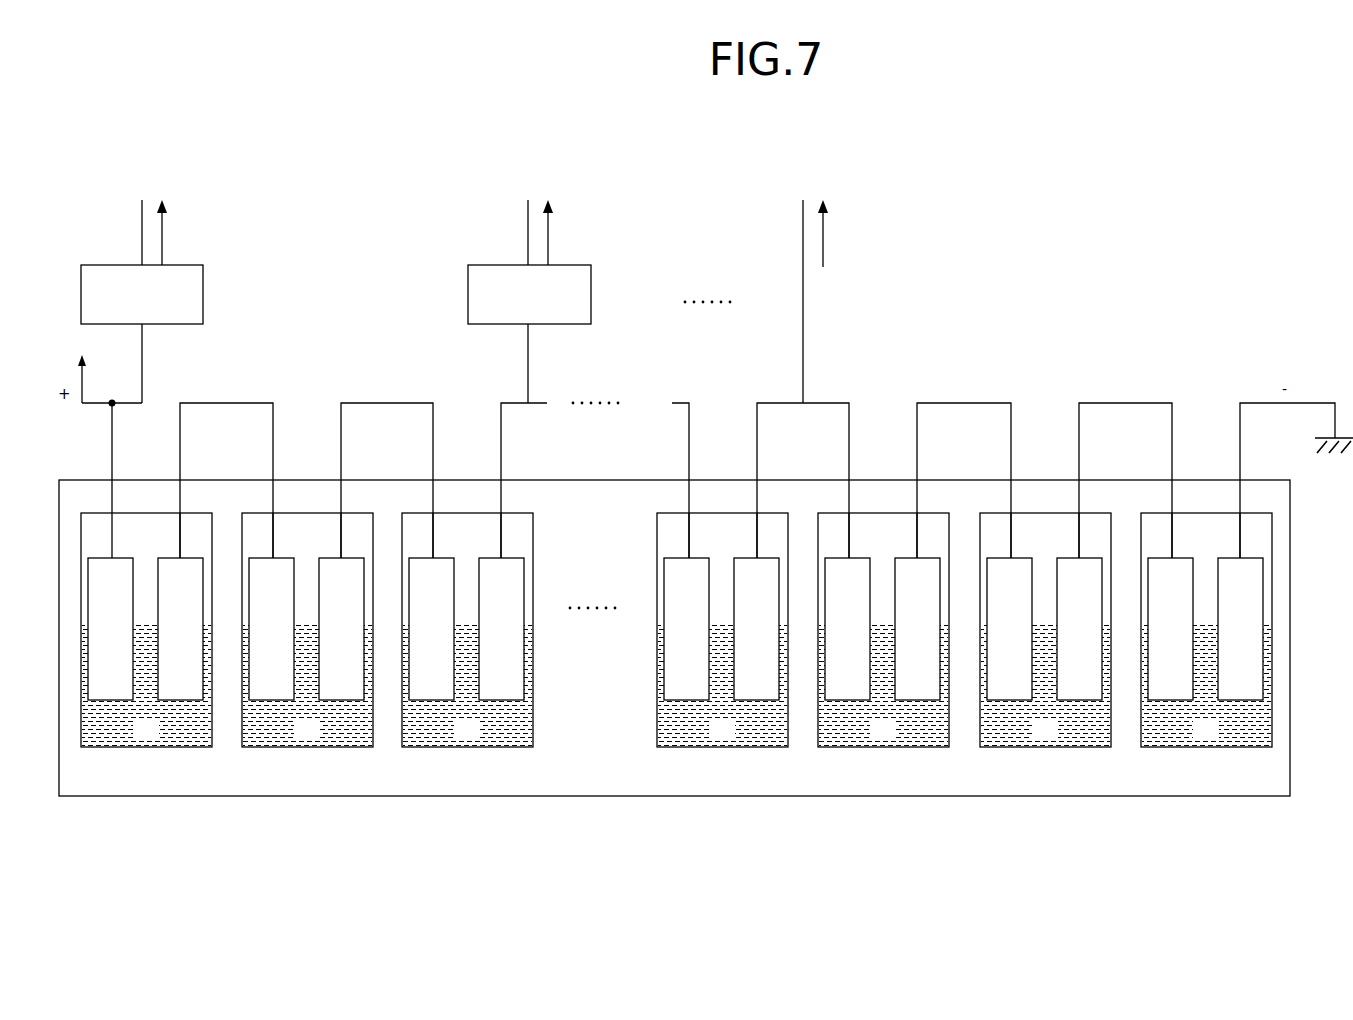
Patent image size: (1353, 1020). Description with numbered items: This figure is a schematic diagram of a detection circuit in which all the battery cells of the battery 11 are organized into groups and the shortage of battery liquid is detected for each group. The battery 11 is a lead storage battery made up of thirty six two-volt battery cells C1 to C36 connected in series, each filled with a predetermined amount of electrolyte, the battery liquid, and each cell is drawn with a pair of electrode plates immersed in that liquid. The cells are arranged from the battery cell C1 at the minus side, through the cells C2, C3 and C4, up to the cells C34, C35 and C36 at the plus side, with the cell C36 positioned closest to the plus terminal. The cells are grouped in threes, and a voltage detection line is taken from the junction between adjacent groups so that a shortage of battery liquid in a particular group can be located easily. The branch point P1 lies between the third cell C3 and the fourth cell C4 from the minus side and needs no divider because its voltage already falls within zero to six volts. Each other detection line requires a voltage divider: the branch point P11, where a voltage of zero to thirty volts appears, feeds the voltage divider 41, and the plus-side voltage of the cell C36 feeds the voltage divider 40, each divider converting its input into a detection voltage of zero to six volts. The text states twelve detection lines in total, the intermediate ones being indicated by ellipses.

The voltage divider 40 is at (203, 297).
The voltage divider 41 is at (591, 297).
The battery 11 is at (1290, 545).
The branch point P11 is at (520, 403).
The branch point P1 is at (803, 403).
The 2V-battery cell C36 is at (145, 509).
The 2V-battery cell C35 is at (306, 509).
The 2V-battery cell C34 is at (466, 509).
The 2V-battery cell C4 is at (725, 509).
The 2V-battery cell C3 is at (886, 509).
The 2V-battery cell C2 is at (1048, 509).
The 2V-battery cell C1 is at (1209, 509).